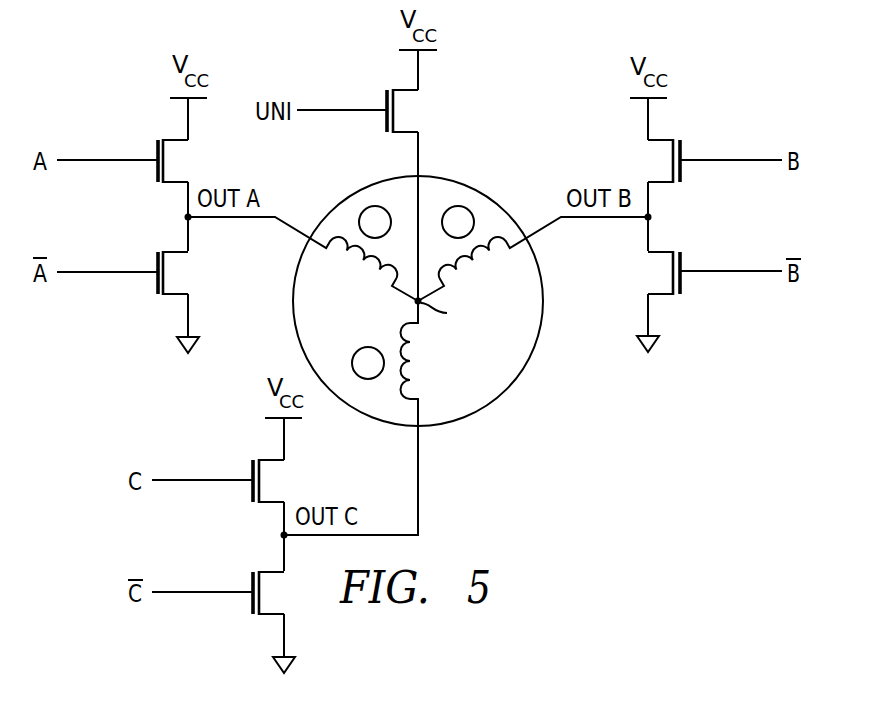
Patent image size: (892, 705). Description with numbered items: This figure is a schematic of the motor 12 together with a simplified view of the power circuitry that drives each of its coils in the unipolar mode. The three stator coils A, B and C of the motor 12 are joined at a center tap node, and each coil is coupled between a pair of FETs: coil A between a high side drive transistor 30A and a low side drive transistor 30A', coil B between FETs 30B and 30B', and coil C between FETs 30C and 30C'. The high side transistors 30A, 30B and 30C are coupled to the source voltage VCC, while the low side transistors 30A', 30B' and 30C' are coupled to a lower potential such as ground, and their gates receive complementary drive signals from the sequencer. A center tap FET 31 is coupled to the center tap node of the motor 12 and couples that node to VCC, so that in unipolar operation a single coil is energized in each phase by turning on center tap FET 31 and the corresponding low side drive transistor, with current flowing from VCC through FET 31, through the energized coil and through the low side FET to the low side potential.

The high side drive transistor 30A is at (122, 150).
The low side drive transistor 30A' is at (122, 280).
The center tap FET 31 is at (386, 98).
The high side drive transistor 30B is at (715, 157).
The low side drive transistor 30B' is at (715, 281).
The high side drive transistor 30C is at (218, 473).
The low side drive transistor 30C' is at (218, 600).
The motor 12 is at (465, 420).